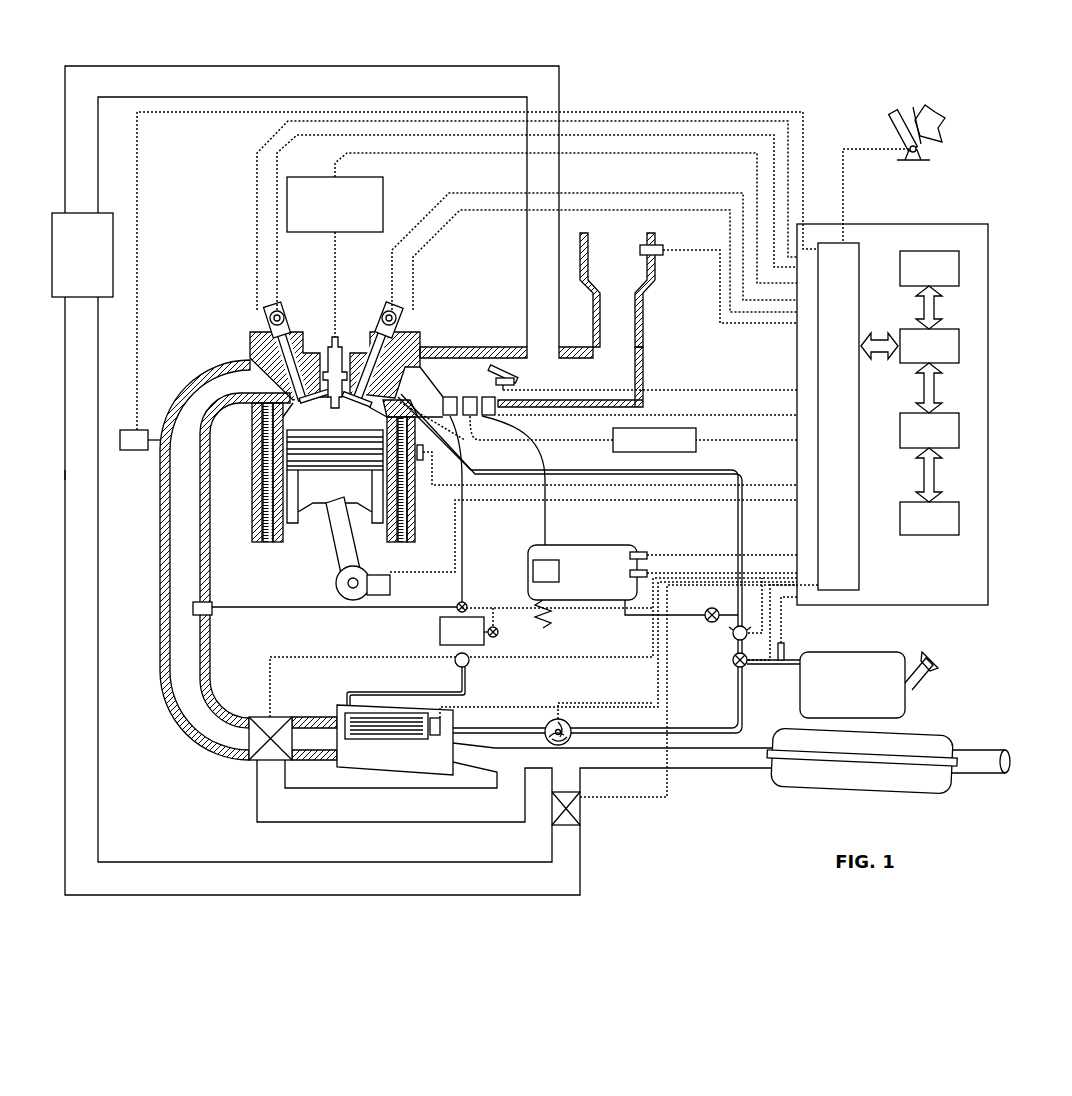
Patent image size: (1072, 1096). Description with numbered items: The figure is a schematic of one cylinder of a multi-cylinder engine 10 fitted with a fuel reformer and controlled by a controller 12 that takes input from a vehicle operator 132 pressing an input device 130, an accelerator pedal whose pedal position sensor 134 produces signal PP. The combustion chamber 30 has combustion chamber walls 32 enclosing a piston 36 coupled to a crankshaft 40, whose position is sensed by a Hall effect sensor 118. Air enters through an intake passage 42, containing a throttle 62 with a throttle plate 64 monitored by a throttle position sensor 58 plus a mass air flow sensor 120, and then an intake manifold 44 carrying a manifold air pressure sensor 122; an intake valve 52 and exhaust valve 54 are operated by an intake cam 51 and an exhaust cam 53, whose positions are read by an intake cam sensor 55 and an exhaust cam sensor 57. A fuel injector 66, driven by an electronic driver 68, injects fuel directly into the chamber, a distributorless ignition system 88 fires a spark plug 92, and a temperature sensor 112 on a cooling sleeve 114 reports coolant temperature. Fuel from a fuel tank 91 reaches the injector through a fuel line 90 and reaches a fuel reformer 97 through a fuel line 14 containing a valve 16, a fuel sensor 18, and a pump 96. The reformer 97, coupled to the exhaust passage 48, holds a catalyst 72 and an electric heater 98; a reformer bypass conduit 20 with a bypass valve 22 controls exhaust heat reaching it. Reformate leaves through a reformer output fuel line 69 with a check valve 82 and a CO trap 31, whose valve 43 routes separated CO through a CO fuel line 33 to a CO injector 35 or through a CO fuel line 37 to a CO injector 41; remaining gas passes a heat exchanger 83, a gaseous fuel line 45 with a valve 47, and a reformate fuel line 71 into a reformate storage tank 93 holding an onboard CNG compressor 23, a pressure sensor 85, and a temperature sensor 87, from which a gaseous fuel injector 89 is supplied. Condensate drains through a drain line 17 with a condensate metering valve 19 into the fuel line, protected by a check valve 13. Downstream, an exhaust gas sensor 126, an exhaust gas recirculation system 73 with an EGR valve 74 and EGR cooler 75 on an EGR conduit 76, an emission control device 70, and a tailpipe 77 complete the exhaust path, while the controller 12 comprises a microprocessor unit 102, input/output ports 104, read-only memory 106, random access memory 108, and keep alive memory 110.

The engine 10 is at (481, 382).
The controller 12 is at (928, 400).
The check valve 13 is at (733, 641).
The fuel line 14 is at (648, 730).
The valve 16 is at (734, 667).
The drain line 17 is at (634, 613).
The fuel sensor 18 is at (784, 640).
The condensate metering valve 19 is at (707, 621).
The reformer bypass conduit 20 is at (275, 802).
The bypass valve 22 is at (266, 716).
The onboard CNG compressor 23 is at (546, 571).
The combustion chamber 30 is at (300, 486).
The CO trap 31 is at (462, 631).
The combustion chamber walls 32 is at (278, 541).
The CO fuel line 33 is at (464, 568).
The CO injector 35 is at (450, 397).
The piston 36 is at (320, 520).
The CO fuel line 37 is at (258, 609).
The crankshaft 40 is at (336, 585).
The CO injector 41 is at (212, 612).
The intake passage 42 is at (603, 271).
The valve 43 is at (465, 602).
The intake manifold 44 is at (463, 388).
The gaseous fuel line 45 is at (540, 630).
The valve 47 is at (497, 636).
The exhaust passage 48 is at (211, 393).
The intake cam 51 is at (380, 308).
The intake valve 52 is at (378, 392).
The exhaust cam 53 is at (285, 308).
The exhaust valve 54 is at (262, 347).
The intake cam sensor 55 is at (398, 320).
The exhaust cam sensor 57 is at (268, 318).
The throttle position sensor 58 is at (514, 384).
The throttle 62 is at (505, 362).
The throttle plate 64 is at (484, 352).
The fuel injector 66 is at (430, 455).
The electronic driver 68 is at (654, 440).
The reformer output fuel line 69 is at (365, 692).
The emission control device 70 is at (790, 788).
The reformate fuel line 71 is at (545, 515).
The catalyst 72 is at (385, 706).
The exhaust gas recirculation system 73 is at (48, 682).
The EGR valve 74 is at (582, 808).
The EGR cooler 75 is at (82, 255).
The EGR conduit 76 is at (65, 470).
The tailpipe 77 is at (993, 776).
The check valve 82 is at (455, 662).
The heat exchanger 83 is at (552, 621).
The pressure sensor 85 is at (637, 551).
The temperature sensor 87 is at (648, 578).
The distributorless ignition system 88 is at (552, 218).
The gaseous fuel injector 89 is at (470, 430).
The fuel line 90 is at (754, 510).
The fuel tank 91 is at (842, 685).
The spark plug 92 is at (336, 340).
The reformate storage tank 93 is at (582, 572).
The pump 96 is at (570, 722).
The fuel reformer 97 is at (345, 766).
The electric heater 98 is at (445, 720).
The microprocessor unit 102 is at (960, 348).
The input/output ports 104 is at (862, 240).
The read-only memory 106 is at (960, 268).
The random access memory 108 is at (960, 434).
The keep alive memory 110 is at (960, 520).
The temperature sensor 112 is at (420, 468).
The cooling sleeve 114 is at (405, 500).
The Hall effect sensor 118 is at (386, 575).
The mass air flow sensor 120 is at (660, 246).
The manifold air pressure sensor 122 is at (490, 416).
The exhaust gas sensor 126 is at (139, 440).
The input device 130 is at (900, 128).
The vehicle operator 132 is at (940, 118).
The pedal position sensor 134 is at (930, 153).